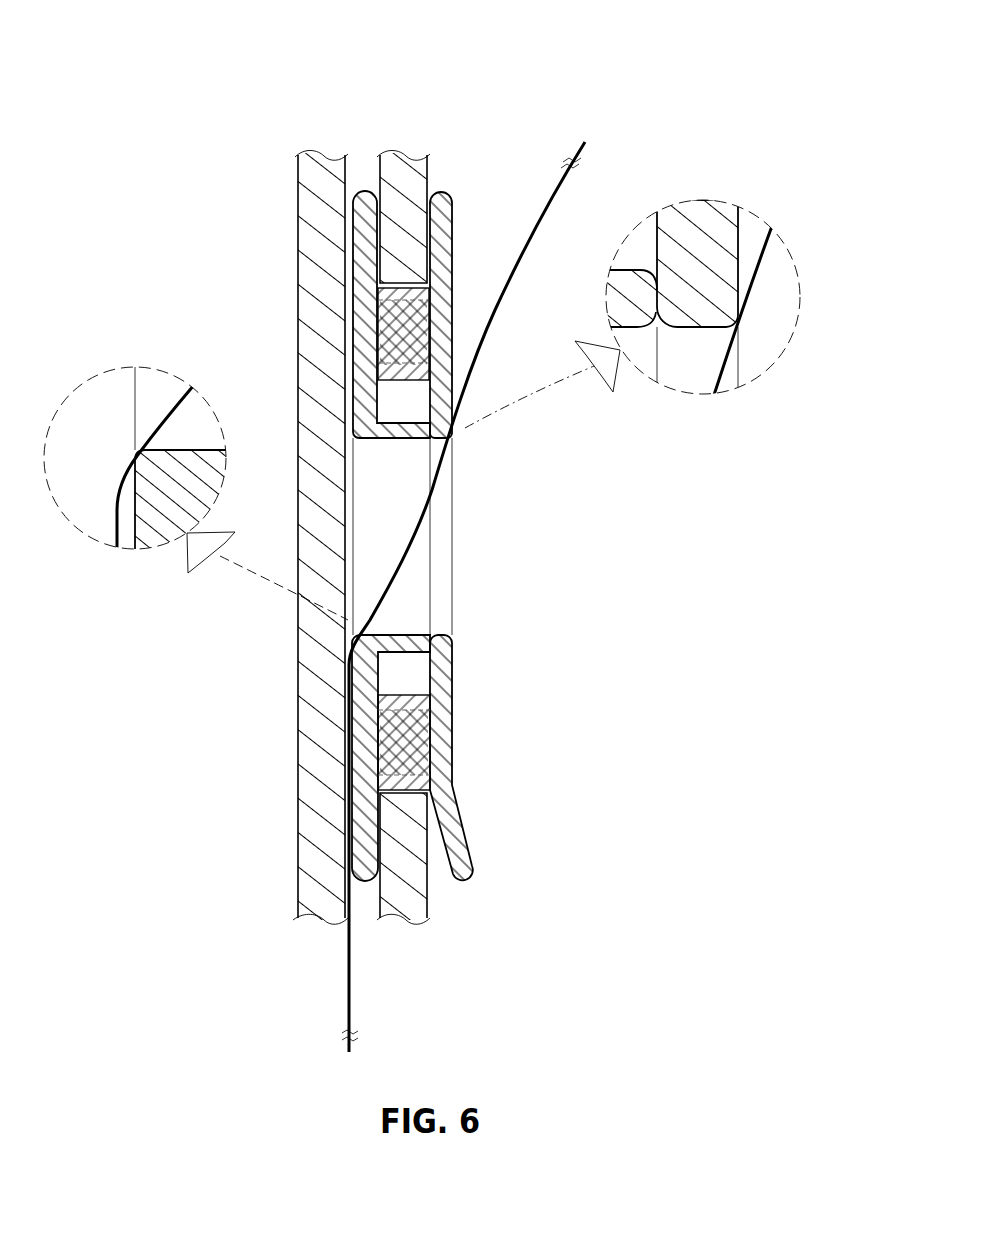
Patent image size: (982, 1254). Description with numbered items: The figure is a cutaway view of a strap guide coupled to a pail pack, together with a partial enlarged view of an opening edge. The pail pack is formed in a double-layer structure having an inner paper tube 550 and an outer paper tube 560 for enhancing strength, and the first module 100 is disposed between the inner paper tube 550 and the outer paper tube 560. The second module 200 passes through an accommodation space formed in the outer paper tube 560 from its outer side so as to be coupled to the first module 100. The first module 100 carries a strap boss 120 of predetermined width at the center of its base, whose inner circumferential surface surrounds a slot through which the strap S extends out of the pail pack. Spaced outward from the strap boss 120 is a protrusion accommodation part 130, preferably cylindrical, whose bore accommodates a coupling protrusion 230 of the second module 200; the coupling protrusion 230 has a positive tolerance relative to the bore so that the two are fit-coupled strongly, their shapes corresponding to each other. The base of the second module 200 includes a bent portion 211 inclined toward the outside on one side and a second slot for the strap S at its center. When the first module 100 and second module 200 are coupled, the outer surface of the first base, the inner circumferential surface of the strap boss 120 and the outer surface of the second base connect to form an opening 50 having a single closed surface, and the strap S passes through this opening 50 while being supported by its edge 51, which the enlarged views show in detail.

The inner paper tube 550 is at (315, 190).
The outer paper tube 560 is at (403, 190).
The first module 100 is at (412, 296).
The second module 200 is at (487, 296).
The strap boss 120 is at (383, 432).
The protrusion accommodation part 130 is at (513, 763).
The coupling protrusion 230 is at (403, 743).
The bent portion 211 is at (467, 832).
The opening 50 is at (396, 566).
The edge 51 is at (135, 457).
The strap S is at (545, 207).